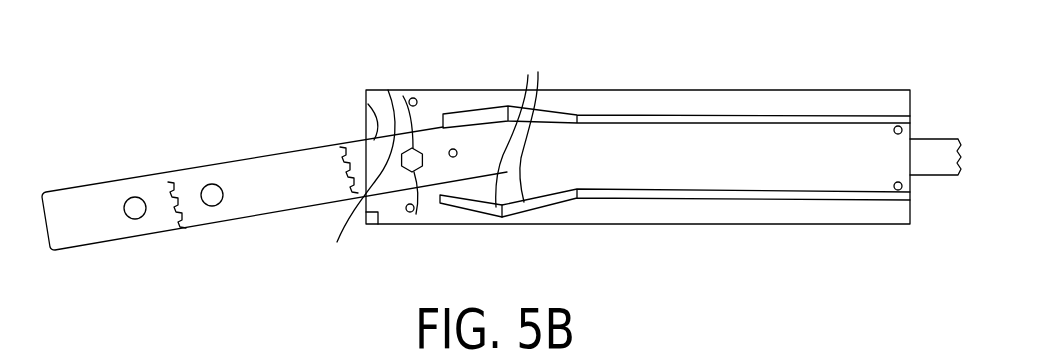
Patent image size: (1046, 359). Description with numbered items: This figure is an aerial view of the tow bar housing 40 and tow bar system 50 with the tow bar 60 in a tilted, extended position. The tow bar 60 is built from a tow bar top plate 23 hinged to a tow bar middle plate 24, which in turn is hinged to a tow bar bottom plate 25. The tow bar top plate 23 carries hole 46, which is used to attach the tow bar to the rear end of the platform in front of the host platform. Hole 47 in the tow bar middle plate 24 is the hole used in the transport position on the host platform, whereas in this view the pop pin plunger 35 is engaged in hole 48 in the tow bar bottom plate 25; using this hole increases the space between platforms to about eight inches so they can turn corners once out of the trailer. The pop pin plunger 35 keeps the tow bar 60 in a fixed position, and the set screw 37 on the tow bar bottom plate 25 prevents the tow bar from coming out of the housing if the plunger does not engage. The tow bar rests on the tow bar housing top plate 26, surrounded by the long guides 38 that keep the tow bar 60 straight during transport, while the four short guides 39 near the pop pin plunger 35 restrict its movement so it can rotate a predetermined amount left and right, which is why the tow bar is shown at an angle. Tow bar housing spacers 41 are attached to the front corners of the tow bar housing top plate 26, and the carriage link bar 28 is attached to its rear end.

The tow bar system 50 is at (268, 100).
The tow bar 60 is at (155, 185).
The hole 47 is at (207, 185).
The hole 46 is at (130, 217).
The tow bar top plate 23 is at (152, 222).
The tow bar middle plate 24 is at (283, 188).
The tow bar bottom plate 25 is at (373, 123).
The tow bar housing spacers 41 is at (349, 186).
The hole 48 is at (403, 96).
The pop pin plunger 35 is at (416, 214).
The set screw 37 is at (450, 150).
The short guides 39 is at (467, 112).
The tow bar housing top plate 26 is at (443, 212).
The long guides 38 is at (790, 190).
The tow bar housing 40 is at (812, 215).
The carriage link bar 28 is at (935, 157).